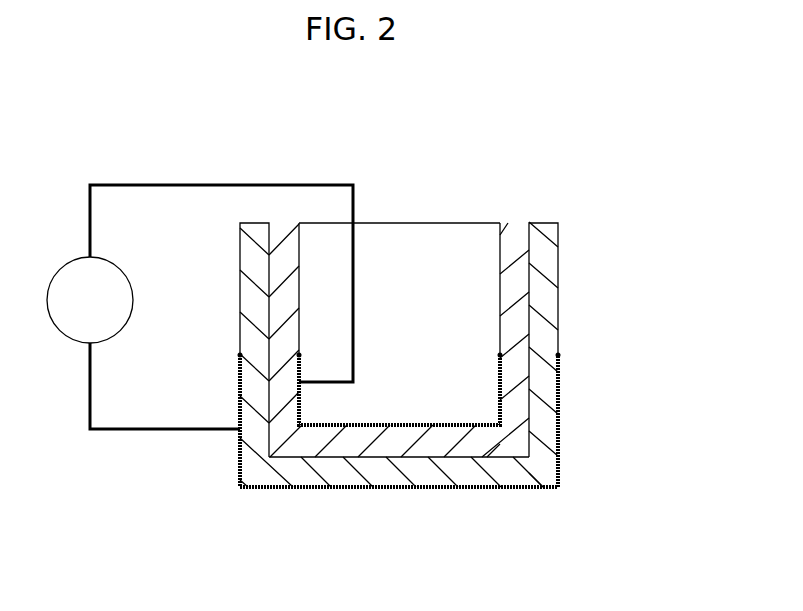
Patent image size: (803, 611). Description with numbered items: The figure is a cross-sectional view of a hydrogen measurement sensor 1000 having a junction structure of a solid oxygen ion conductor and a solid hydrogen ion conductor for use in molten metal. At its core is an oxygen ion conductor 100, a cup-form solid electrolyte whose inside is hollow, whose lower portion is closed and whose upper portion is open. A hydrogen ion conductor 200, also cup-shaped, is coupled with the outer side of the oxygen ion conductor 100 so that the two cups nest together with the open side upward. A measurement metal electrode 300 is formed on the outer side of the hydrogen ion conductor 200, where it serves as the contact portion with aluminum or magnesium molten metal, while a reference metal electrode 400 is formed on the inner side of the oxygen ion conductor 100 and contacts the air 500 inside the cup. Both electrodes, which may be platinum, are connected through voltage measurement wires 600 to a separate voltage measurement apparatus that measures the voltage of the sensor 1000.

The oxygen ion conductor 100 is at (440, 443).
The hydrogen ion conductor 200 is at (384, 471).
The measurement metal electrode 300 is at (558, 437).
The reference metal electrode 400 is at (500, 375).
The air 500 is at (392, 317).
The voltage measurement wires 600 is at (192, 183).
The hydrogen measurement sensor 1000 is at (570, 149).